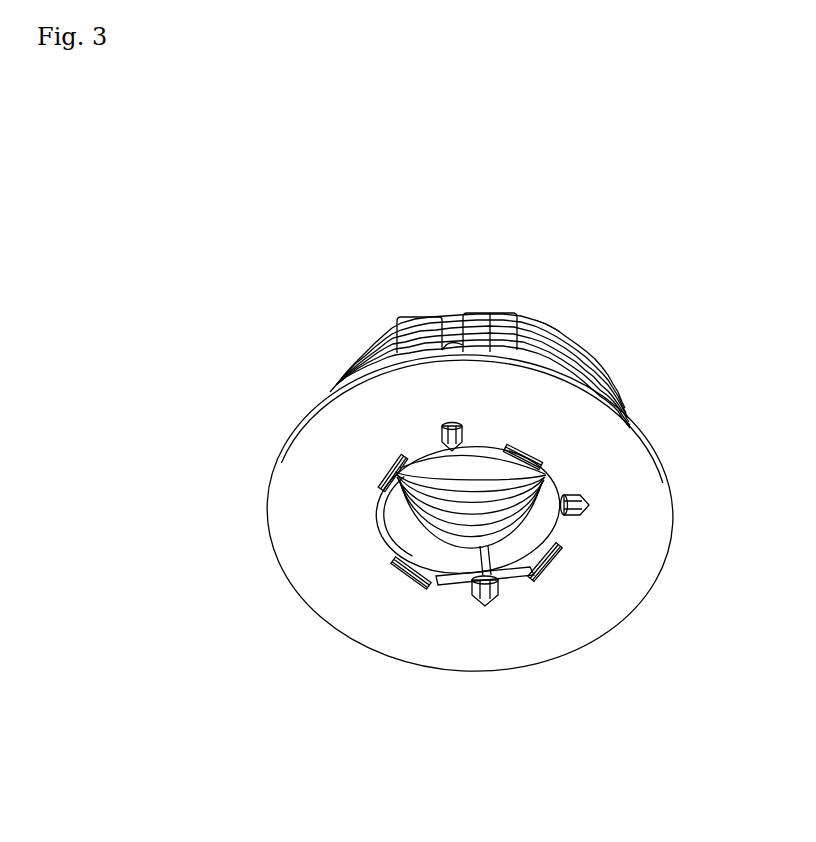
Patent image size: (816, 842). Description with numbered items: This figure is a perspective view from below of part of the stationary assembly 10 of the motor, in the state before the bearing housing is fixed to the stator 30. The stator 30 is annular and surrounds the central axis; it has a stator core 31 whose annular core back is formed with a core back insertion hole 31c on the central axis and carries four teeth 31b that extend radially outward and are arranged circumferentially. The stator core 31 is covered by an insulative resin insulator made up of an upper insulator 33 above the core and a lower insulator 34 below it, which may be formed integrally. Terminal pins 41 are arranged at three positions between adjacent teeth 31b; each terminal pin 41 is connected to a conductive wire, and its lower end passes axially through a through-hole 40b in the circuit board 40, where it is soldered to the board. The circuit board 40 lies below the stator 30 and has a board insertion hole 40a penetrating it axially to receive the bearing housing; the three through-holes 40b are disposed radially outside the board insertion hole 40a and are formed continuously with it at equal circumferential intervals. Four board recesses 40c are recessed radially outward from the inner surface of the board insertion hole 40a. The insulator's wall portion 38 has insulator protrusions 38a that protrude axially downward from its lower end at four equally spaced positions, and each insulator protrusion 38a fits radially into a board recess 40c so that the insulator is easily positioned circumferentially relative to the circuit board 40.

The stationary assembly 10 is at (630, 297).
The stator 30 is at (365, 347).
The stator core 31 is at (514, 325).
The teeth 31b is at (404, 320).
The core back insertion hole 31c is at (475, 513).
The upper insulator 33 is at (549, 330).
The lower insulator 34 is at (545, 532).
The wall portion 38 is at (450, 548).
The insulator protrusion 38a is at (390, 472).
The circuit board 40 is at (330, 572).
The board insertion hole 40a is at (385, 527).
The through-hole 40b is at (445, 437).
The board recess 40c is at (540, 428).
The terminal pin 41 is at (460, 428).